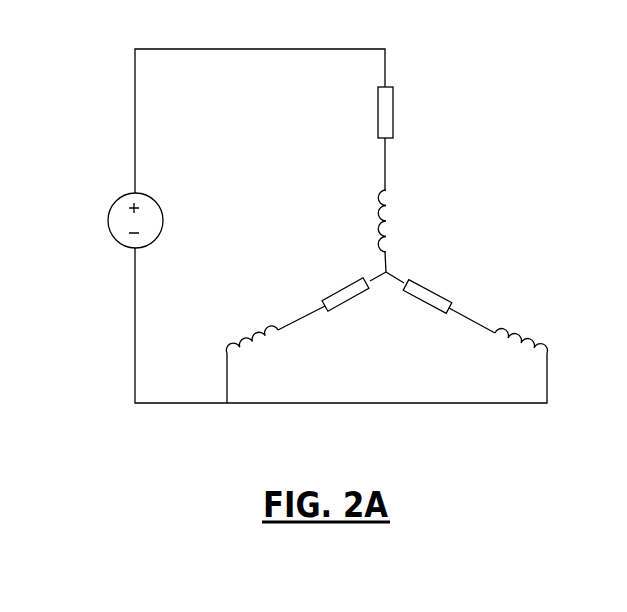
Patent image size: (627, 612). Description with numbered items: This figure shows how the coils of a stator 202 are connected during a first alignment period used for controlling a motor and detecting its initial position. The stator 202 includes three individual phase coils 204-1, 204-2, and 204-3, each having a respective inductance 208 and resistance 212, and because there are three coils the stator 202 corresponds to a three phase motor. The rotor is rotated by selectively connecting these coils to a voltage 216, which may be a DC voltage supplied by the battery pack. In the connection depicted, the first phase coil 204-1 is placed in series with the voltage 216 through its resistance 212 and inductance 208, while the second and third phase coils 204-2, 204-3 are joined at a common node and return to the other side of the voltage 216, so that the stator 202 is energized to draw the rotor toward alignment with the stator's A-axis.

The stator 202 is at (510, 152).
The phase coil 204-1 is at (364, 158).
The phase coil 204-2 is at (282, 306).
The phase coil 204-3 is at (495, 308).
The inductance 208 is at (380, 226).
The resistance 212 is at (378, 112).
The voltage 216 is at (118, 197).